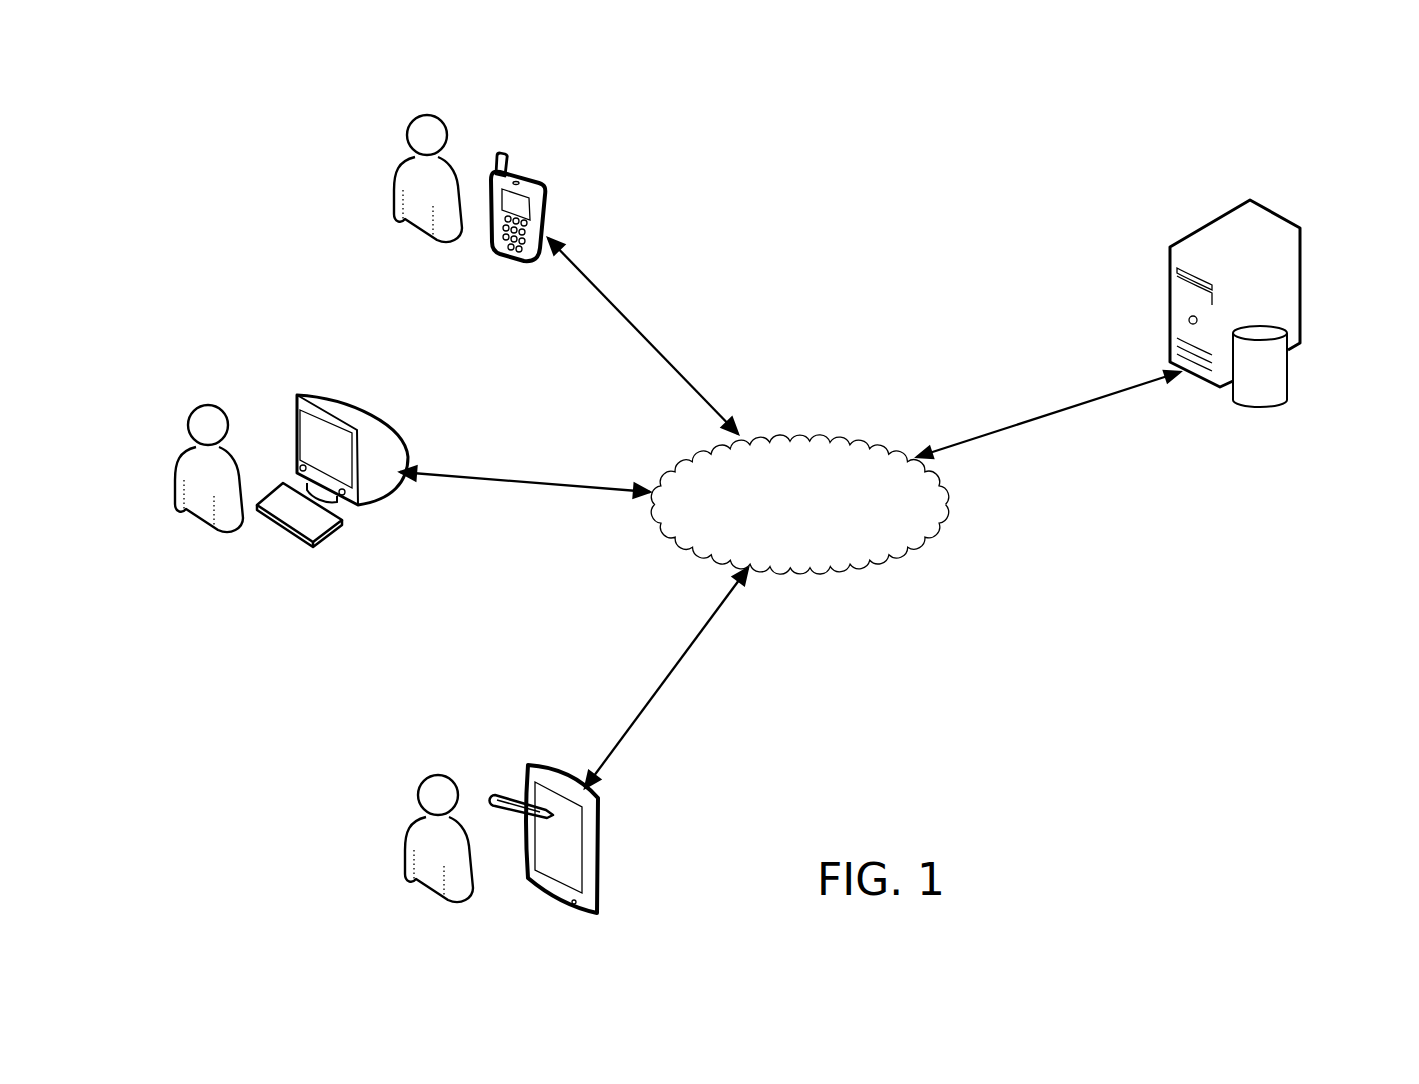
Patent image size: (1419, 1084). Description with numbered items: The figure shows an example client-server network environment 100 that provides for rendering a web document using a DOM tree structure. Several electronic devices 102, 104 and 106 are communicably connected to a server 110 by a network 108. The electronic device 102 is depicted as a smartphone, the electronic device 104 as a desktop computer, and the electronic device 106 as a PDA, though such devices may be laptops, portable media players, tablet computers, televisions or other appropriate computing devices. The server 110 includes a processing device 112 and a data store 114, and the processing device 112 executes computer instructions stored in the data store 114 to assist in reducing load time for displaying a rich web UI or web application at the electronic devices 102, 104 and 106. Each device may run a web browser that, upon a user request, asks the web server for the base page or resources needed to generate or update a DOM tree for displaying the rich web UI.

The network environment 100 is at (924, 166).
The electronic device 102 is at (532, 178).
The electronic device 104 is at (367, 406).
The electronic device 106 is at (538, 762).
The network 108 is at (800, 432).
The server 110 is at (1169, 416).
The processing device 112 is at (1273, 210).
The data store 114 is at (1287, 383).